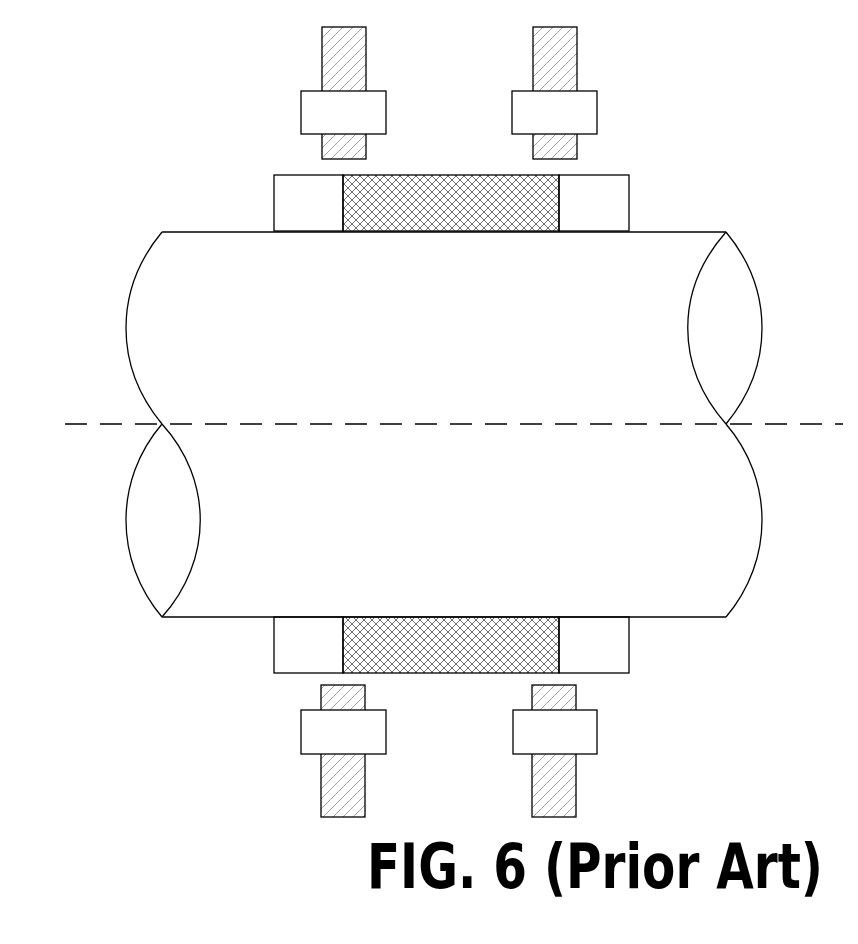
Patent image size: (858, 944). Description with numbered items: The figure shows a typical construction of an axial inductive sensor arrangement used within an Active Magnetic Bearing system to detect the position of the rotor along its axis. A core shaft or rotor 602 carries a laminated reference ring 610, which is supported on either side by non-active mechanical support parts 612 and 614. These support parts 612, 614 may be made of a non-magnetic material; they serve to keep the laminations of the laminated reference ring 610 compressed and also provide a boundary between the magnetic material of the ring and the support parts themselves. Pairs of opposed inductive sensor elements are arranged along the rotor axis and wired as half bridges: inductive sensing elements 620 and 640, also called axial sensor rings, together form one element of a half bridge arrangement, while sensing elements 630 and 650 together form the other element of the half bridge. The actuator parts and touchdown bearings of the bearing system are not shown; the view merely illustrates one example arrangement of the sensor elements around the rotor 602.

The core shaft or rotor 602 is at (762, 565).
The laminated reference ring 610 is at (483, 173).
The non-active mechanical support part 612 is at (278, 171).
The non-active mechanical support part 614 is at (620, 173).
The inductive sensing element 620 is at (300, 83).
The sensing element 630 is at (520, 83).
The inductive sensing element 640 is at (302, 771).
The sensing element 650 is at (522, 770).